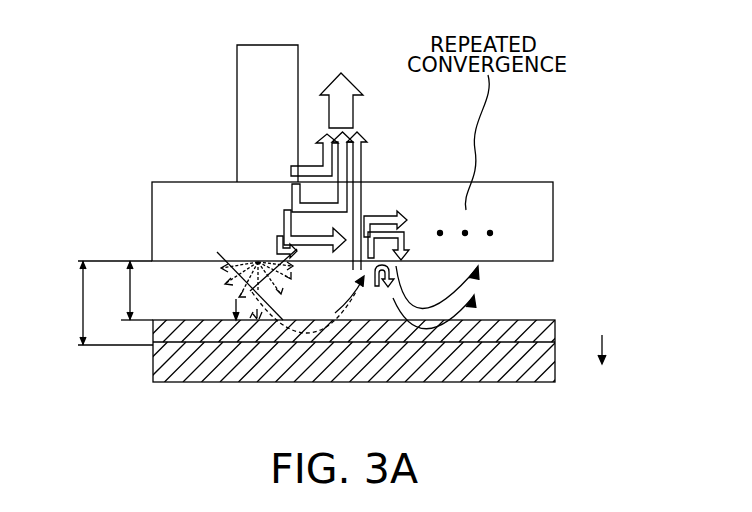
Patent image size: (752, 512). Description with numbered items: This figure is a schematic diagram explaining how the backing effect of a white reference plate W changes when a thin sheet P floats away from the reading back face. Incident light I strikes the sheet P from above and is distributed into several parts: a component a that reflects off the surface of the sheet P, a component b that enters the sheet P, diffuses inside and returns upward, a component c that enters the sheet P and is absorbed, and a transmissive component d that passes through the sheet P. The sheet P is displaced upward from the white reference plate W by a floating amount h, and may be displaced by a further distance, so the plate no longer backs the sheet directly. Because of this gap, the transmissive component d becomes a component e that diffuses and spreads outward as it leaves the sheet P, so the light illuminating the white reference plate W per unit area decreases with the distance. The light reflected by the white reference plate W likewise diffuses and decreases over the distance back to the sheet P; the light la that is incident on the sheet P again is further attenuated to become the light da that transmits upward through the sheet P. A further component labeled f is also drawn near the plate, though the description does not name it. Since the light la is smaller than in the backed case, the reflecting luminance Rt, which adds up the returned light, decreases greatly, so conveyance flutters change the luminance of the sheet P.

The incident light I is at (267, 113).
The sheet P is at (553, 209).
The white reference plate W is at (555, 323).
The reflecting luminance component Rt is at (341, 88).
The component a is at (314, 155).
The component b is at (322, 172).
The component c is at (315, 231).
The transmissive component d is at (274, 243).
The component da is at (373, 201).
The component e is at (246, 284).
The flow f is at (247, 308).
The light la is at (308, 298).
The floating amount h is at (115, 290).